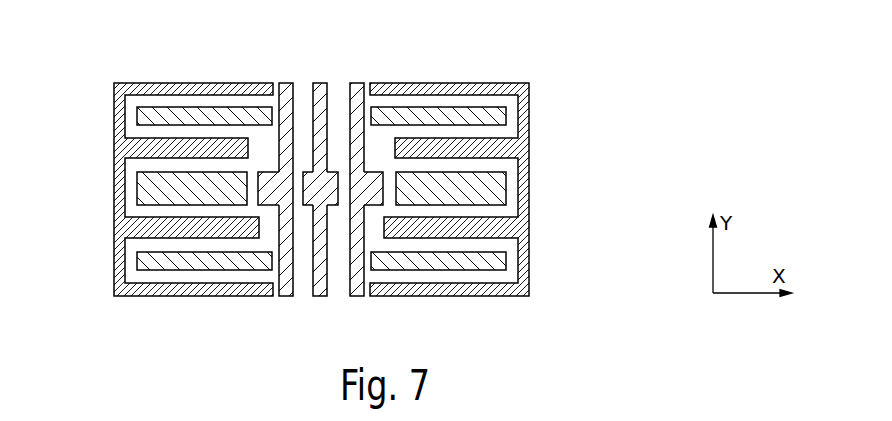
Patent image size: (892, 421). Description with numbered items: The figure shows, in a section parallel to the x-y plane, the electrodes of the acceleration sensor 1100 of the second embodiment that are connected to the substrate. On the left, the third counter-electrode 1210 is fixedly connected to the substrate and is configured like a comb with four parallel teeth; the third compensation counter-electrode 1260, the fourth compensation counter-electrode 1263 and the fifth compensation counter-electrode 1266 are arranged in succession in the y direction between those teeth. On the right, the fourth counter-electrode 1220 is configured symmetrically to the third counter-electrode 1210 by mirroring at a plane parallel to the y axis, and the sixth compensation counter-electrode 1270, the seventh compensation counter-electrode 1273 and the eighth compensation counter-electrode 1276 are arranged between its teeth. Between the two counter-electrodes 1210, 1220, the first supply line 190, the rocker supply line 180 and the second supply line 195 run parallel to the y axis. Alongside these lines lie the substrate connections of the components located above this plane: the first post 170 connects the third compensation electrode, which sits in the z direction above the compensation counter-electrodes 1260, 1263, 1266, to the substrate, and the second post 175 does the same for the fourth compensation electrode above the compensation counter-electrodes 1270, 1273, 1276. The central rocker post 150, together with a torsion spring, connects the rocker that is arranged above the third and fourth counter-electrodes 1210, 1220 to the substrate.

The acceleration sensor 1100 is at (417, 178).
The third counter-electrode 1210 is at (117, 121).
The fourth counter-electrode 1220 is at (525, 97).
The third compensation counter-electrode 1260 is at (201, 113).
The fourth compensation counter-electrode 1263 is at (150, 192).
The fifth compensation counter-electrode 1266 is at (150, 257).
The sixth compensation counter-electrode 1270 is at (465, 113).
The seventh compensation counter-electrode 1273 is at (490, 192).
The eighth compensation counter-electrode 1276 is at (495, 257).
The first supply line 190 is at (282, 98).
The rocker supply line 180 is at (320, 98).
The second supply line 195 is at (362, 97).
The first post 170 is at (270, 195).
The rocker post 150 is at (313, 185).
The second post 175 is at (372, 190).